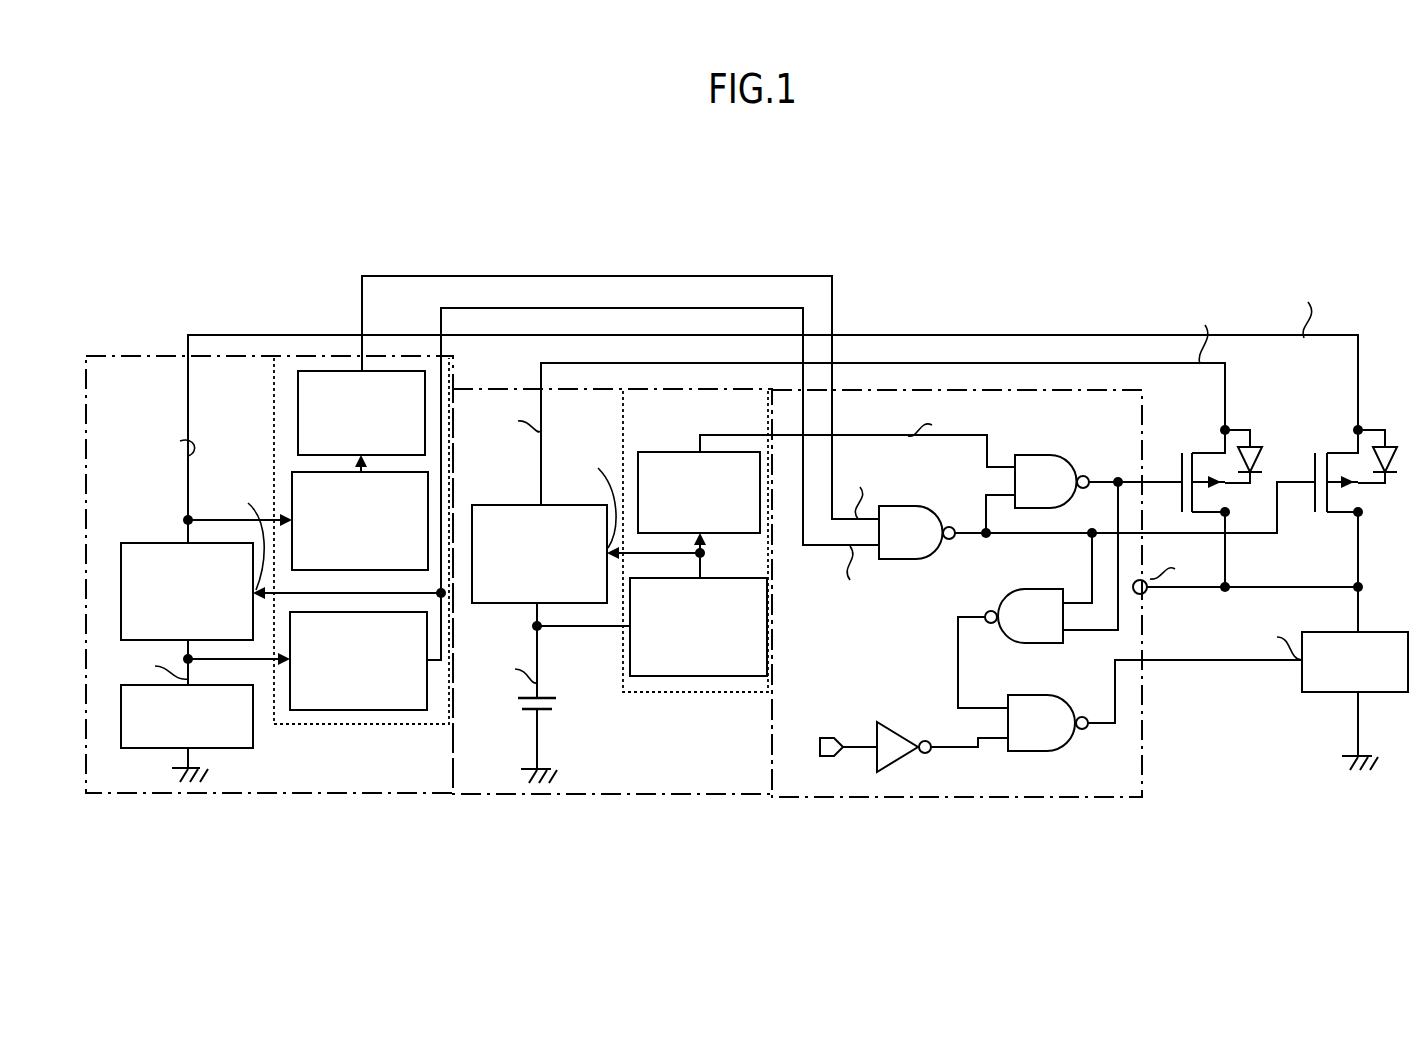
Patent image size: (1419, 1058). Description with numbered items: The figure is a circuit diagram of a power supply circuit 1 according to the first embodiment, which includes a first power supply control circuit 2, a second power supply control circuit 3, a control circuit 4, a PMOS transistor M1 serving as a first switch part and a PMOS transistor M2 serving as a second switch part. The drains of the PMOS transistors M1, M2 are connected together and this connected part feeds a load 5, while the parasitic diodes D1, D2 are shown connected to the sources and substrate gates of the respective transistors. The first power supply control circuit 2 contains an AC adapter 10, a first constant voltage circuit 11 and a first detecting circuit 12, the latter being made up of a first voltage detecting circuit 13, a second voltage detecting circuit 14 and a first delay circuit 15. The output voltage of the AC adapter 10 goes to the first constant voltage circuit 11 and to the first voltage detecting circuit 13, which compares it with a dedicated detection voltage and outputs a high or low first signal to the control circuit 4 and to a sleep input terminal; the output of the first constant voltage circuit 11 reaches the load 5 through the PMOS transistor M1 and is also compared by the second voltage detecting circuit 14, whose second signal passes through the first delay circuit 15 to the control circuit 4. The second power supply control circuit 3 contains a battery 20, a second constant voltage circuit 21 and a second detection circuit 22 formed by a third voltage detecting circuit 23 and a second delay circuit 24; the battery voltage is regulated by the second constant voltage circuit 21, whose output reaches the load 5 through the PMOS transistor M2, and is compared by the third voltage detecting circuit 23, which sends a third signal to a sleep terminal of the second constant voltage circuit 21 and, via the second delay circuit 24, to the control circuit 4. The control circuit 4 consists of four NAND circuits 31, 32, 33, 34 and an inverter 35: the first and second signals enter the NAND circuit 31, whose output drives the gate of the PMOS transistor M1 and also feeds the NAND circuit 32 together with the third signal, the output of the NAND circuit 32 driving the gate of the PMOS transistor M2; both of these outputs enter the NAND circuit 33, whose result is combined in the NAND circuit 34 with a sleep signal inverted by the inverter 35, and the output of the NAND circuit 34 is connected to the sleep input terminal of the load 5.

The power supply circuit 1 is at (976, 240).
The first power supply control circuit 2 is at (339, 786).
The second power supply control circuit 3 is at (641, 788).
The control circuit 4 is at (929, 790).
The load 5 is at (1382, 632).
The AC adapter 10 is at (255, 749).
The first constant voltage circuit 11 is at (160, 543).
The first detecting circuit 12 is at (280, 443).
The first voltage detecting circuit 13 is at (388, 710).
The second voltage detecting circuit 14 is at (292, 483).
The first delay circuit 15 is at (298, 395).
The battery 20 is at (522, 710).
The second constant voltage circuit 21 is at (500, 505).
The second detection circuit 22 is at (632, 425).
The third voltage detecting circuit 23 is at (708, 676).
The second delay circuit 24 is at (672, 452).
The NAND circuit 31 is at (901, 506).
The NAND circuit 32 is at (1038, 455).
The NAND circuit 33 is at (1038, 589).
The NAND circuit 34 is at (1033, 695).
The inverter 35 is at (898, 734).
The PMOS transistor M1 is at (1339, 468).
The PMOS transistor M2 is at (1206, 468).
The parasitic diode D1 is at (1388, 451).
The parasitic diode D2 is at (1258, 451).